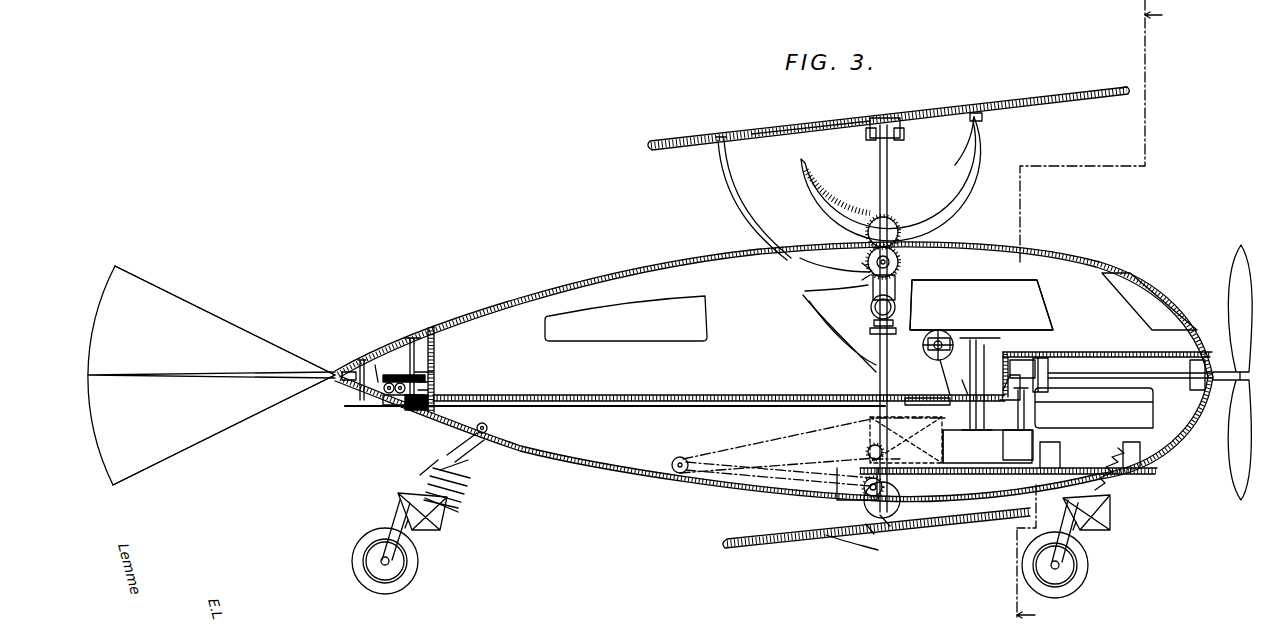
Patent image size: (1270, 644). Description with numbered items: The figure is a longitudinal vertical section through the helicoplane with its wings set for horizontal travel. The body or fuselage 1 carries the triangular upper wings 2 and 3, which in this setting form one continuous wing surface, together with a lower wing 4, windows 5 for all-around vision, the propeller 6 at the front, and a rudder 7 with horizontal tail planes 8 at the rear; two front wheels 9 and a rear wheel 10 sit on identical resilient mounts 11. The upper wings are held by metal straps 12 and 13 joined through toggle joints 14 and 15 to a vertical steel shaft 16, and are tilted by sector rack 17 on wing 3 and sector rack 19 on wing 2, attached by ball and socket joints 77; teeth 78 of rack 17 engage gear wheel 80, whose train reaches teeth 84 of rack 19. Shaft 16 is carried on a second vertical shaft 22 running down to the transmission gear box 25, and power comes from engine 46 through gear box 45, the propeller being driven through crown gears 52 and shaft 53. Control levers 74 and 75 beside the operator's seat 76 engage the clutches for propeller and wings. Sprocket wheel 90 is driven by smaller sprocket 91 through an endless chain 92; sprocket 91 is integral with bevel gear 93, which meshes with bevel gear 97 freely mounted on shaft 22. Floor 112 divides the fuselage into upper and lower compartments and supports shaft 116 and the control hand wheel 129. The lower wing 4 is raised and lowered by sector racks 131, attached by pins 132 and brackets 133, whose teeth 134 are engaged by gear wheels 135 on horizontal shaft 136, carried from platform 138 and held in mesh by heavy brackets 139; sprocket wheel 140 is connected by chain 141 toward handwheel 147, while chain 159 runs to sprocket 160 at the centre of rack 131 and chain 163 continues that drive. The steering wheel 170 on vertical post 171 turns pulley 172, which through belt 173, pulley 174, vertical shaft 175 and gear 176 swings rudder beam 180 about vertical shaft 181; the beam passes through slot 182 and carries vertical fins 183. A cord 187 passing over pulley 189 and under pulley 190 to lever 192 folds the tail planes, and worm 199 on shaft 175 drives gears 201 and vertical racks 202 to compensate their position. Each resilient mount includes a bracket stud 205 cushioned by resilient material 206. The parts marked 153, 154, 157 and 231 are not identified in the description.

The body or fuselage 1 is at (628, 473).
The upper wing 2 is at (775, 125).
The upper wing 3 is at (1054, 100).
The lower wing 4 is at (983, 535).
The windows 5 is at (650, 316).
The propeller 6 is at (1232, 290).
The rudder 7 is at (190, 296).
The horizontal tail planes 8 is at (258, 372).
The front wheels 9 is at (1080, 576).
The rear wheel 10 is at (410, 561).
The resilient mounts 11 is at (452, 511).
The metal strap 12 is at (907, 124).
The metal strap 13 is at (790, 133).
The toggle joint 14 is at (896, 140).
The toggle joint 15 is at (866, 140).
The vertical steel shaft 16 is at (884, 190).
The sector rack 17 is at (978, 155).
The sector rack 19 is at (733, 205).
The second vertical shaft 22 is at (868, 381).
The transmission gear box 25 is at (906, 440).
The gear box 45 is at (987, 446).
The engine 46 is at (1150, 412).
The crown gears 52 is at (1048, 358).
The shaft 53 is at (1100, 372).
The control lever 74 is at (1026, 358).
The control lever 75 is at (1000, 360).
The operator's seat 76 is at (950, 330).
The ball and socket joints 77 is at (983, 119).
The external teeth 78 is at (845, 200).
The gear wheel 80 is at (899, 230).
The teeth 84 is at (864, 264).
The sprocket wheel 90 is at (898, 263).
The sprocket 91 is at (871, 312).
The endless chain 92 is at (852, 293).
The bevel gear 93 is at (874, 325).
The bevel gear 97 is at (900, 303).
The floor 112 is at (770, 395).
The shaft 116 is at (935, 410).
The control hand wheel 129 is at (945, 335).
The sector racks 131 is at (862, 362).
The pins 132 is at (868, 538).
The brackets 133 is at (903, 526).
The teeth 134 is at (860, 348).
The gear wheels 135 is at (866, 458).
The horizontal shaft 136 is at (836, 482).
The platform 138 is at (942, 470).
The heavy brackets 139 is at (943, 450).
The sprocket wheel 140 is at (866, 450).
The chain 141 is at (874, 421).
The handwheel 147 is at (978, 338).
The gear 153 is at (862, 512).
The gear 154 is at (905, 508).
The pinion 157 is at (884, 488).
The chain 159 is at (840, 446).
The sprocket 160 is at (671, 462).
The chain 163 is at (773, 442).
The steering wheel 170 is at (1045, 290).
The vertical post 171 is at (995, 424).
The pulley 172 is at (985, 410).
The belt 173 is at (663, 407).
The pulley 174 is at (412, 412).
The vertical shaft 175 is at (408, 345).
The gear 176 is at (437, 370).
The rudder beam 180 is at (372, 388).
The vertical shaft 181 is at (366, 372).
The slot 182 is at (342, 370).
The vertical fins 183 is at (224, 375).
The cord 187 is at (437, 375).
The pulley 189 is at (435, 385).
The pulley 190 is at (435, 394).
The lever 192 is at (945, 378).
The worm 199 is at (398, 398).
The gears 201 is at (389, 395).
The vertical racks 202 is at (380, 408).
The bracket stud 205 is at (475, 448).
The resilient material 206 is at (448, 443).
The nut 231 is at (875, 335).